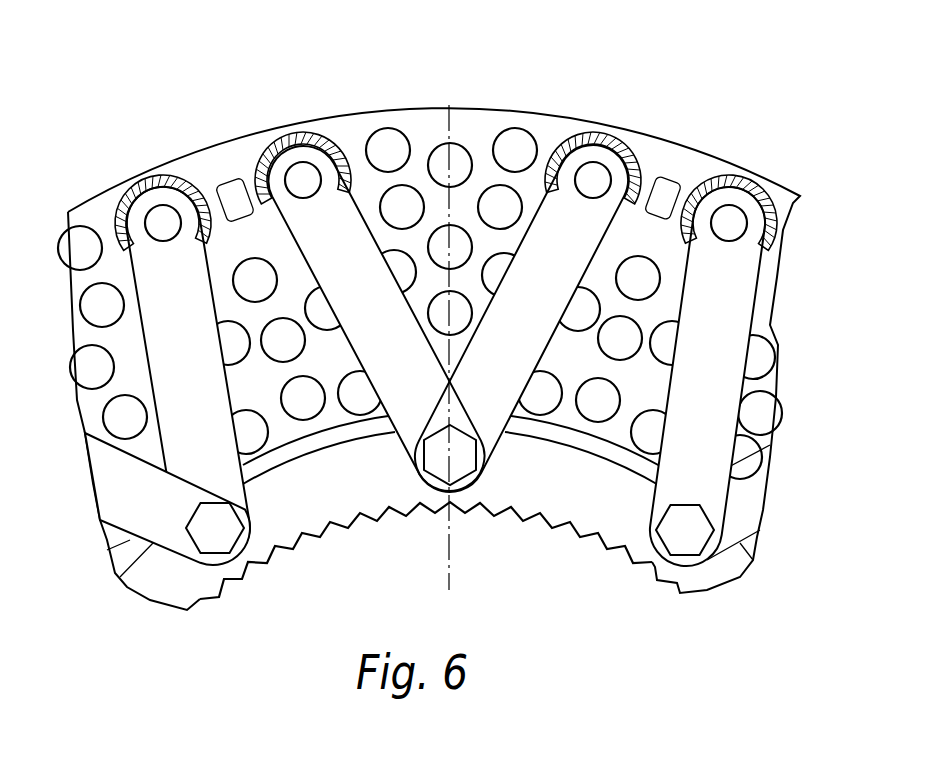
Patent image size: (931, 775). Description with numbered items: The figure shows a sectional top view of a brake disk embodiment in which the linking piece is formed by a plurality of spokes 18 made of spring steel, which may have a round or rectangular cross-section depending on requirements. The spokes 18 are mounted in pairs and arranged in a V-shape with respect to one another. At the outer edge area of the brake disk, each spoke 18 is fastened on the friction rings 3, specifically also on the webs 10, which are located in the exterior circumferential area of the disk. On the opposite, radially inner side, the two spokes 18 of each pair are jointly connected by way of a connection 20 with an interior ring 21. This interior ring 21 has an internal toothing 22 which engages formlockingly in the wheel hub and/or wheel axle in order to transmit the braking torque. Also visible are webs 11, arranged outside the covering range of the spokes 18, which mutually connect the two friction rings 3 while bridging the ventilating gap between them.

The friction ring 3 is at (660, 163).
The web 10 is at (295, 177).
The web 11 is at (438, 168).
The spoke 18 is at (544, 245).
The connection 20 is at (687, 527).
The interior ring 21 is at (533, 493).
The internal toothing 22 is at (283, 555).